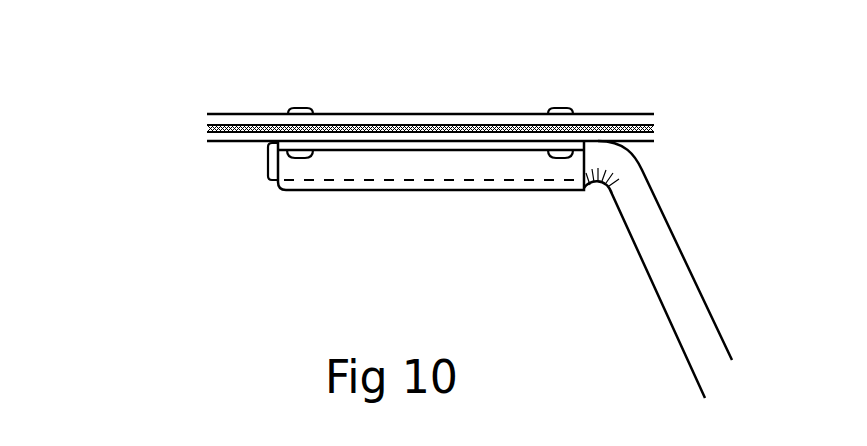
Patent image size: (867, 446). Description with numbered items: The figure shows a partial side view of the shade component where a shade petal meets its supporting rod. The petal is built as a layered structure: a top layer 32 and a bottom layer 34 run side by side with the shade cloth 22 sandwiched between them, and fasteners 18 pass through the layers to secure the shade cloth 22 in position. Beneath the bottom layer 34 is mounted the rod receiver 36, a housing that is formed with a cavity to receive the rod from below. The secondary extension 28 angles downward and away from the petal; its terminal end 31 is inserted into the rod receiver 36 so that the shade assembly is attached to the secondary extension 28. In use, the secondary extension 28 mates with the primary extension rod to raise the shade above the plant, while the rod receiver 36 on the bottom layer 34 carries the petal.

The fasteners 18 is at (308, 103).
The shade cloth 22 is at (200, 130).
The secondary extension 28 is at (727, 310).
The terminal end 31 is at (268, 160).
The top layer 32 is at (424, 73).
The bottom layer 34 is at (643, 147).
The rod receiver 36 is at (317, 195).